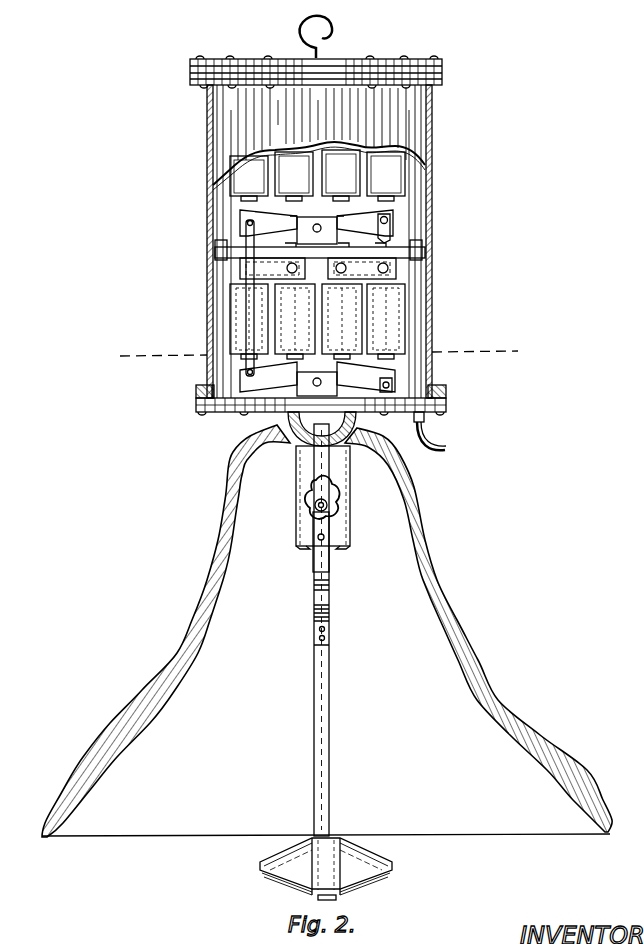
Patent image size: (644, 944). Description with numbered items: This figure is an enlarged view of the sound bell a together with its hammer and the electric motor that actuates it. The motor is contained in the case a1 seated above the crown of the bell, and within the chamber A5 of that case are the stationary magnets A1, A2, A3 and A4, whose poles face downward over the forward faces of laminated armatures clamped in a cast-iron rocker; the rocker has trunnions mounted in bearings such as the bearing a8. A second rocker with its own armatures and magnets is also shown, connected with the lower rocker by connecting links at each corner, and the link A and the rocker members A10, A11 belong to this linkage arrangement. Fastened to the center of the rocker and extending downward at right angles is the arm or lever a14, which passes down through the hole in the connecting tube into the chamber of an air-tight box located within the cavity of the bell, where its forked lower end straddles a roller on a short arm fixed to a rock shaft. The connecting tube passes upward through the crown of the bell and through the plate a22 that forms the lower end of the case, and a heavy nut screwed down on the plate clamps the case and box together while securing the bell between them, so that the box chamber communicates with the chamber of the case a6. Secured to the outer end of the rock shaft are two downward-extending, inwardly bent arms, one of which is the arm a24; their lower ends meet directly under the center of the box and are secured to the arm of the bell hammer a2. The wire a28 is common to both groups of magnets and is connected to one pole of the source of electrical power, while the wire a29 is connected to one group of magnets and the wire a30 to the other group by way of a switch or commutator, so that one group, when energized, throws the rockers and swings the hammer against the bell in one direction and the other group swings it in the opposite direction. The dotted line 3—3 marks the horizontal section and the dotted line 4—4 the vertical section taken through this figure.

The bell a is at (327, 631).
The case a1 is at (323, 227).
The foot / base plate a2 is at (276, 875).
The case a6 is at (262, 400).
The bearing a8 is at (290, 430).
The arm or lever a14 is at (326, 482).
The plate a22 is at (246, 402).
The downward-extending inwardly bent arm a24 is at (330, 578).
The wire a28 is at (447, 452).
The wire a29 is at (448, 450).
The wire a30 is at (452, 424).
The connecting rod A is at (316, 376).
The stationary magnet A1 is at (240, 325).
The stationary magnet A2 is at (295, 321).
The stationary magnet A3 is at (342, 321).
The stationary magnet A4 is at (386, 321).
The chamber A5 is at (240, 224).
The lower yoke arm A10 is at (280, 372).
The lower yoke arm A11 is at (360, 372).
The dotted line 3— 3 is at (319, 354).
The dotted line 4— 4 is at (321, 630).